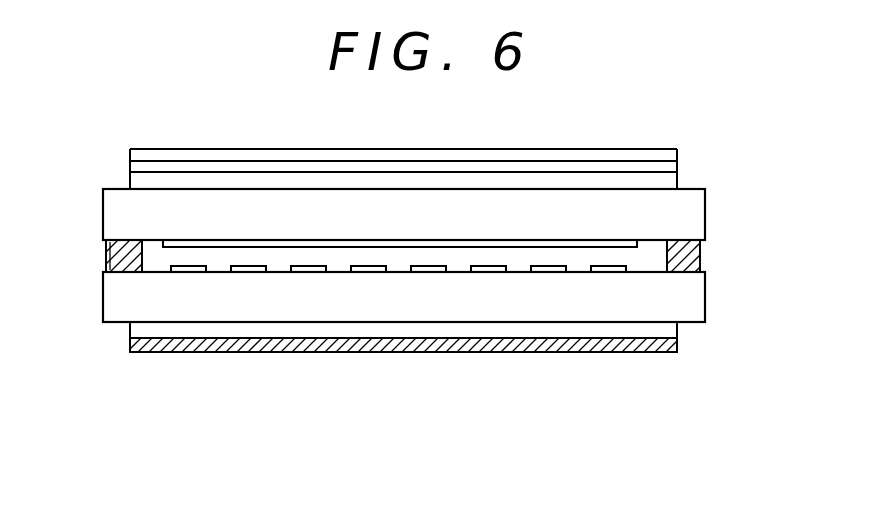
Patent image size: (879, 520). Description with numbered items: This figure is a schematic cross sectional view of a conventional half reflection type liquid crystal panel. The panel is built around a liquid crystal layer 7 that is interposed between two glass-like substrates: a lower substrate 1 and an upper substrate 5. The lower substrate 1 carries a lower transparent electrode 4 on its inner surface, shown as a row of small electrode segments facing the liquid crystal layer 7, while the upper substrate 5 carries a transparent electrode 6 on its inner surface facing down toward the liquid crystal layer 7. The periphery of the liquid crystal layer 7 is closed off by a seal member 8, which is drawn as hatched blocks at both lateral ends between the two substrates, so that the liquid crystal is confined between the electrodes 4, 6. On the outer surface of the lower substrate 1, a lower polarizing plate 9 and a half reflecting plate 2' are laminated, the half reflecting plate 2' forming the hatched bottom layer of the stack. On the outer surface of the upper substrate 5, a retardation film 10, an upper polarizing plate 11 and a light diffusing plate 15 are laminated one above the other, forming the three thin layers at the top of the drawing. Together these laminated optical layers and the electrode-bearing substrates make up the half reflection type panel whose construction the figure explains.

The lower substrate 1 is at (688, 293).
The half reflecting plate 2' is at (525, 404).
The lower transparent electrode 4 is at (490, 270).
The upper substrate 5 is at (693, 213).
The transparent electrode 6 is at (545, 245).
The liquid crystal layer 7 is at (150, 254).
The seal member 8 is at (107, 259).
The lower polarizing plate 9 is at (670, 328).
The retardation film 10 is at (668, 182).
The upper polarizing plate 11 is at (677, 165).
The light diffusing plate 15 is at (677, 154).